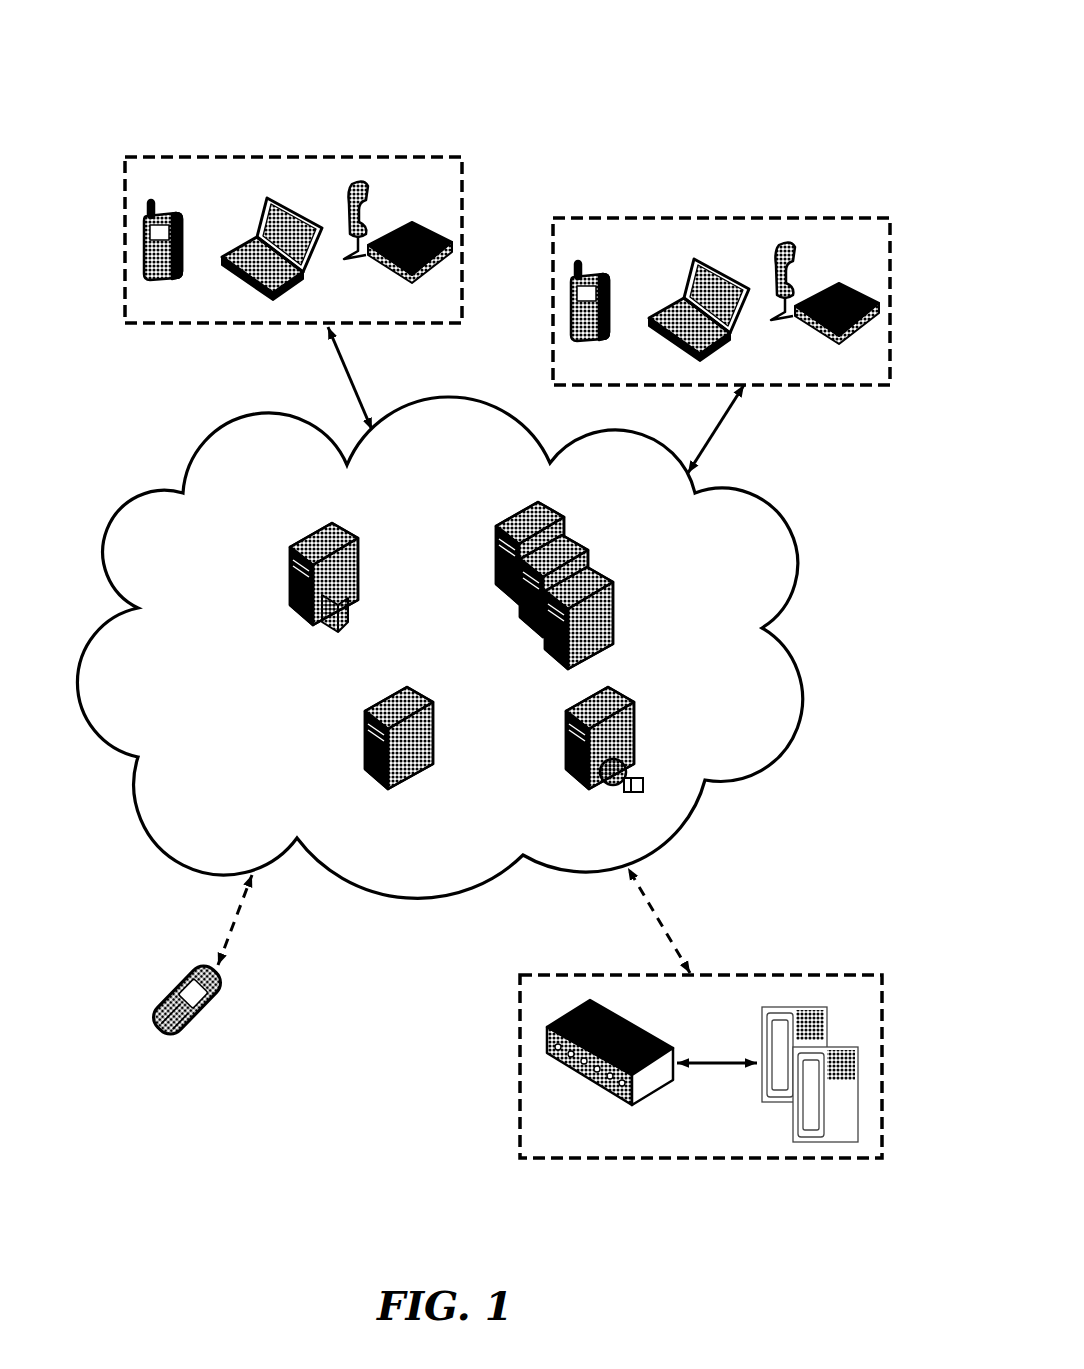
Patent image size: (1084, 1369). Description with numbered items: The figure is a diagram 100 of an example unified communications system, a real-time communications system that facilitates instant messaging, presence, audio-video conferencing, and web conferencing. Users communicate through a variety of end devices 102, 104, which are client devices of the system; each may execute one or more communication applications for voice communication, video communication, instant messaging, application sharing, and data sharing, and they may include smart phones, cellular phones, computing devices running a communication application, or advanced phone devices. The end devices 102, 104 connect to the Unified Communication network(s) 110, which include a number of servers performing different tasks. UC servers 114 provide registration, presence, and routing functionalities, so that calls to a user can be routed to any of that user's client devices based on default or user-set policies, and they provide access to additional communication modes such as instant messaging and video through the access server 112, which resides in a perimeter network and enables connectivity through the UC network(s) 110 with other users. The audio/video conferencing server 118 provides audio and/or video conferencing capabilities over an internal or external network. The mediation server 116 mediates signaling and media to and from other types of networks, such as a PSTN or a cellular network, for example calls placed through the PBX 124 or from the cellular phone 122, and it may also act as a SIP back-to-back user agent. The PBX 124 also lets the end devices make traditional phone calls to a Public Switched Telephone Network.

The diagram 100 is at (745, 47).
The end devices 102 is at (182, 151).
The end devices 104 is at (611, 214).
The Unified Communication (UC) network(s) 110 is at (213, 426).
The access server 112 is at (318, 515).
The UC servers 114 is at (523, 505).
The mediation server 116 is at (377, 695).
The audio/video (A/V) conferencing server 118 is at (587, 697).
The cellular phone 122 is at (171, 982).
The PBX 124 is at (546, 960).